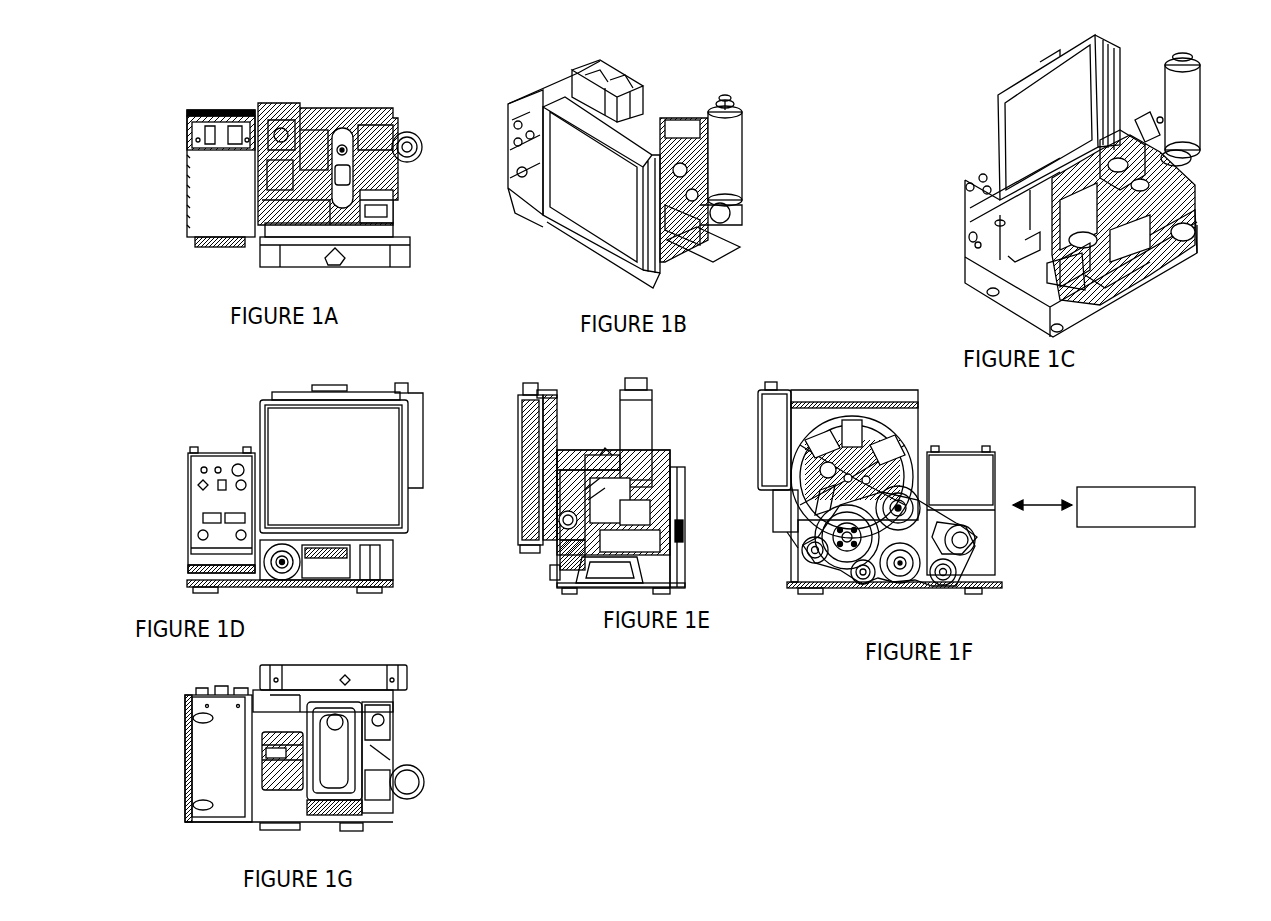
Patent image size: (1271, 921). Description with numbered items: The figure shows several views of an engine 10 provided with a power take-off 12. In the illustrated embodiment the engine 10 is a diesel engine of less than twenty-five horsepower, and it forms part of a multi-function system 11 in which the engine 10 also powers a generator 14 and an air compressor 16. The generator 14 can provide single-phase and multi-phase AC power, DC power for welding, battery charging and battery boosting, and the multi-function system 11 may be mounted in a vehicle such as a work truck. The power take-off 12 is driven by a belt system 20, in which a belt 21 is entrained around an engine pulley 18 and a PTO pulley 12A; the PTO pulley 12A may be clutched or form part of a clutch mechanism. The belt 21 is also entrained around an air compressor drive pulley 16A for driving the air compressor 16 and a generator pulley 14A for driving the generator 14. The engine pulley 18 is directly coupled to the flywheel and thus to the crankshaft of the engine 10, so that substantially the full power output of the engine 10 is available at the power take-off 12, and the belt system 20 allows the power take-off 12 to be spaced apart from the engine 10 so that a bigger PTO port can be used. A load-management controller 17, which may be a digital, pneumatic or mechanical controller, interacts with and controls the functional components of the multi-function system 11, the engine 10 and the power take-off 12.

In FIG. 1A, the engine 10 is at (248, 163).
In FIG. 1B, the engine 10 is at (672, 161).
In FIG. 1C, the engine 10 is at (1046, 219).
In FIG. 1D, the engine 10 is at (334, 497).
In FIG. 1E, the engine 10 is at (640, 468).
In FIG. 1F, the engine 10 is at (912, 465).
In FIG. 1G, the engine 10 is at (341, 742).
In FIG. 1A, the multi-function system 11 is at (163, 157).
In FIG. 1B, the multi-function system 11 is at (765, 114).
In FIG. 1C, the multi-function system 11 is at (982, 121).
In FIG. 1D, the multi-function system 11 is at (449, 425).
In FIG. 1E, the multi-function system 11 is at (689, 421).
In FIG. 1F, the multi-function system 11 is at (874, 380).
In FIG. 1G, the multi-function system 11 is at (425, 734).
In FIG. 1C, the power take-off 12 is at (1086, 293).
In FIG. 1D, the power take-off 12 is at (277, 567).
In FIG. 1F, the power take-off 12 is at (878, 586).
In FIG. 1F, the PTO pulley 12A is at (898, 567).
In FIG. 1A, the generator 14 is at (200, 188).
In FIG. 1B, the generator 14 is at (540, 105).
In FIG. 1C, the generator 14 is at (950, 215).
In FIG. 1D, the generator 14 is at (195, 493).
In FIG. 1F, the generator 14 is at (982, 475).
In FIG. 1F, the generator pulley 14A is at (973, 538).
In FIG. 1A, the air compressor 16 is at (268, 142).
In FIG. 1F, the air compressor drive pulley 16A is at (900, 510).
In FIG. 1F, the load-management controller 17 is at (1185, 518).
In FIG. 1F, the engine pulley 18 is at (827, 543).
In FIG. 1F, the belt system 20 is at (996, 591).
In FIG. 1F, the belt 21 is at (967, 567).